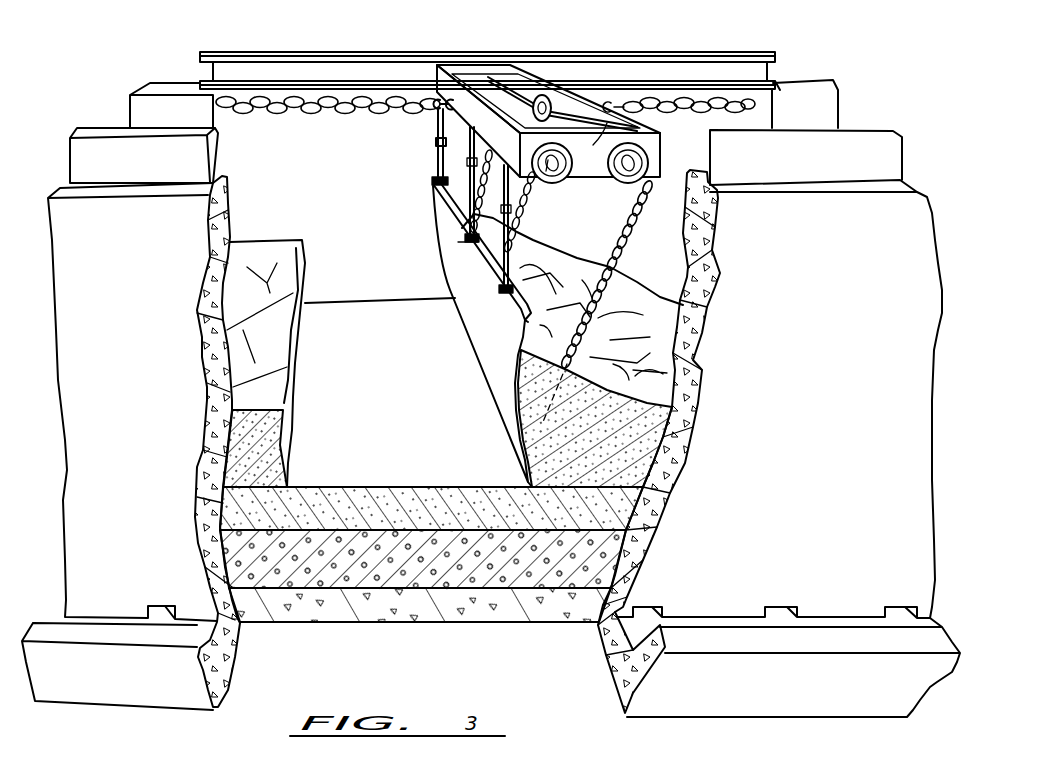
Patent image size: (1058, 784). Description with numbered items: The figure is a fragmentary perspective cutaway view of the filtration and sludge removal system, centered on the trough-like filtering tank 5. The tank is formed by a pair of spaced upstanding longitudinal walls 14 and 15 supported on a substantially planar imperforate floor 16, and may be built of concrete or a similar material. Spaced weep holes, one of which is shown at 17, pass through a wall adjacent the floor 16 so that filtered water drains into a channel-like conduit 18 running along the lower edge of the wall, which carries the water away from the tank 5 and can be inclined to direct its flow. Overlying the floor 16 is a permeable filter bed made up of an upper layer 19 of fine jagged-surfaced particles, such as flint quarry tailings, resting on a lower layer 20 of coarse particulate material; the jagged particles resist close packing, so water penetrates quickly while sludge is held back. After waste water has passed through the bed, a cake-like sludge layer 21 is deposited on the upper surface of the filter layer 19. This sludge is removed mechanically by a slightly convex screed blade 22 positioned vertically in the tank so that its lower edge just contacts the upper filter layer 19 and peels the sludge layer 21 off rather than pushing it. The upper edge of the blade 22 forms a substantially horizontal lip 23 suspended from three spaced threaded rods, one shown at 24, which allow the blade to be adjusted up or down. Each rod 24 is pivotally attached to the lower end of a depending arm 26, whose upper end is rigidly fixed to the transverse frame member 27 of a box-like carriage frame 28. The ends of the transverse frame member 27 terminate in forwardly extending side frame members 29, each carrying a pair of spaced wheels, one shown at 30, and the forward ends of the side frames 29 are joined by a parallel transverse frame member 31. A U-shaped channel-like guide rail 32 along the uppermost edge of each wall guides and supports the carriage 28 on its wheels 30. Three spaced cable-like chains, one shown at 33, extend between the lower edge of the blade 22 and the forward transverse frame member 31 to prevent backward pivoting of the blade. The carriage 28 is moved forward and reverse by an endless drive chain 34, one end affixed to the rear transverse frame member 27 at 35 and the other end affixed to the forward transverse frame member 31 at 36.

The filtering tank 5 is at (124, 68).
The longitudinal wall 14 is at (158, 425).
The longitudinal wall 15 is at (345, 205).
The floor 16 is at (338, 624).
The weep hole 17 is at (644, 611).
The channel-like conduit 18 is at (213, 637).
The upper filter layer 19 is at (411, 487).
The lower filter layer 20 is at (420, 583).
The sludge layer 21 is at (265, 397).
The screed blade 22 is at (486, 367).
The horizontal lip 23 is at (473, 263).
The threaded rod 24 is at (438, 167).
The depending arm 26 is at (436, 130).
The transverse frame member 27 is at (446, 72).
The carriage frame 28 is at (583, 178).
The side frame member 29 is at (473, 72).
The wheel 30 is at (546, 184).
The transverse frame member 31 is at (533, 83).
The guide rail 32 is at (706, 70).
The chain 33 is at (607, 287).
The endless drive chain 34 is at (241, 112).
The chain attachment 35 is at (436, 74).
The chain attachment 36 is at (613, 100).